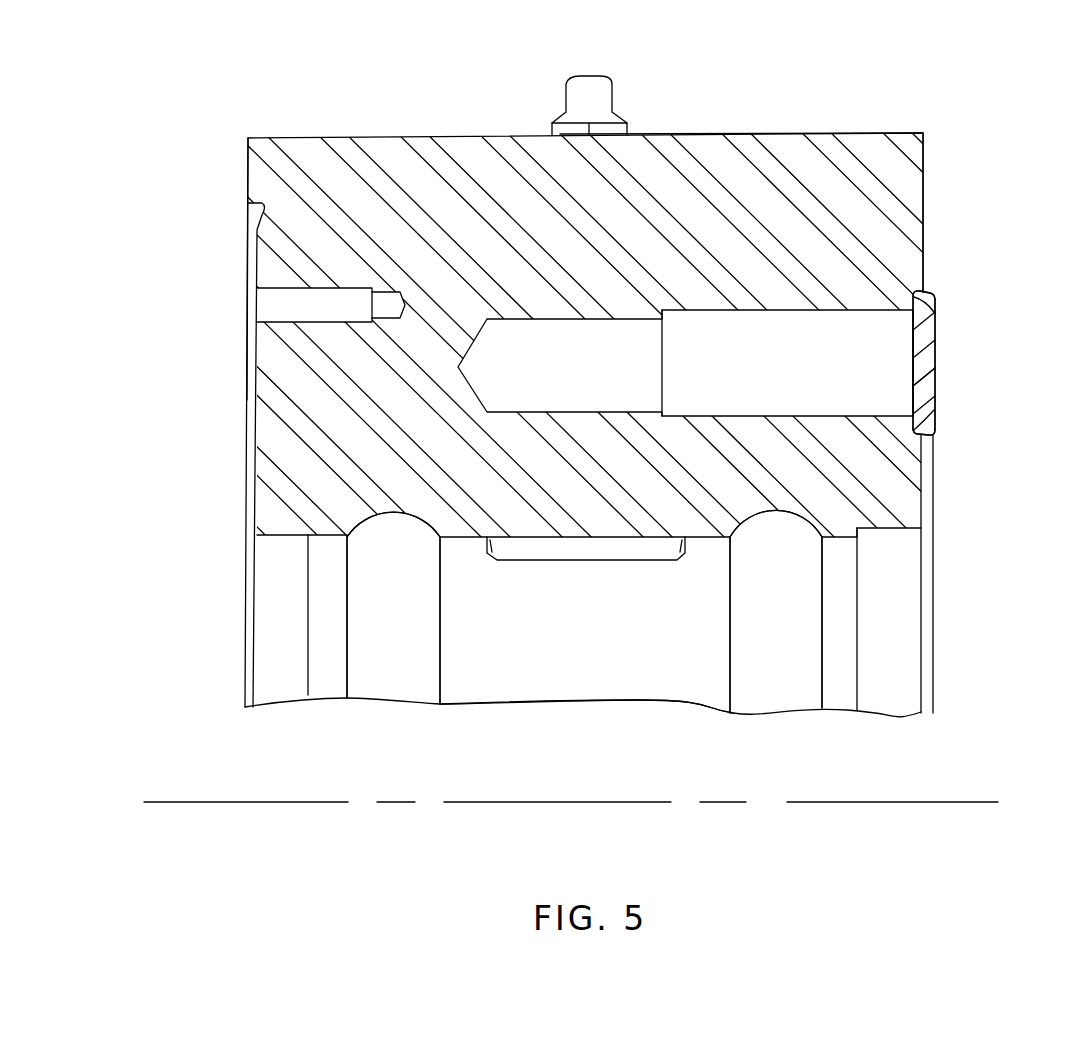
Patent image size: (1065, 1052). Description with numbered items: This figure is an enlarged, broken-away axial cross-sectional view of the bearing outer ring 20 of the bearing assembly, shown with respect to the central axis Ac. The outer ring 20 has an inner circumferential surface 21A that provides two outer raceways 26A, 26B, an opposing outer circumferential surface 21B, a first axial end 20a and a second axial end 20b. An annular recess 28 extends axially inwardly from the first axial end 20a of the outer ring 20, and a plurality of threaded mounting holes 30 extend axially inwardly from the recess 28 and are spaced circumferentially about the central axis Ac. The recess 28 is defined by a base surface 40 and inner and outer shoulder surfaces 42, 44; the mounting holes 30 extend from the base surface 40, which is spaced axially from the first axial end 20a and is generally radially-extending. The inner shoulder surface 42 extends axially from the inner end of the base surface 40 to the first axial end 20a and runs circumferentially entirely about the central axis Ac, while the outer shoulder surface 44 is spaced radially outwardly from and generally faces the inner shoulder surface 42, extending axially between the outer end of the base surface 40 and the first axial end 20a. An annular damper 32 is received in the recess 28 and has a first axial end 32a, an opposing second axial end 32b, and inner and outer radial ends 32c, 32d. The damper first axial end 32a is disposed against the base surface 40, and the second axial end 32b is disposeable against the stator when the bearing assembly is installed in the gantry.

The bearing outer ring 20 is at (282, 72).
The first axial end 20a is at (925, 188).
The second axial end 20b is at (247, 170).
The inner circumferential surface 21A is at (548, 665).
The outer circumferential surface 21B is at (752, 134).
The outer raceway 26A is at (380, 655).
The outer raceway 26B is at (747, 673).
The annular recess 28 is at (918, 325).
The threaded mounting hole 30 is at (833, 318).
The annular damper 32 is at (952, 345).
The first axial end 32a is at (912, 356).
The second axial end 32b is at (936, 363).
The inner radial end 32c is at (935, 436).
The outer radial end 32d is at (924, 292).
The base surface 40 is at (921, 388).
The inner shoulder surface 42 is at (930, 418).
The outer shoulder surface 44 is at (935, 300).
The central axis Ac is at (989, 802).